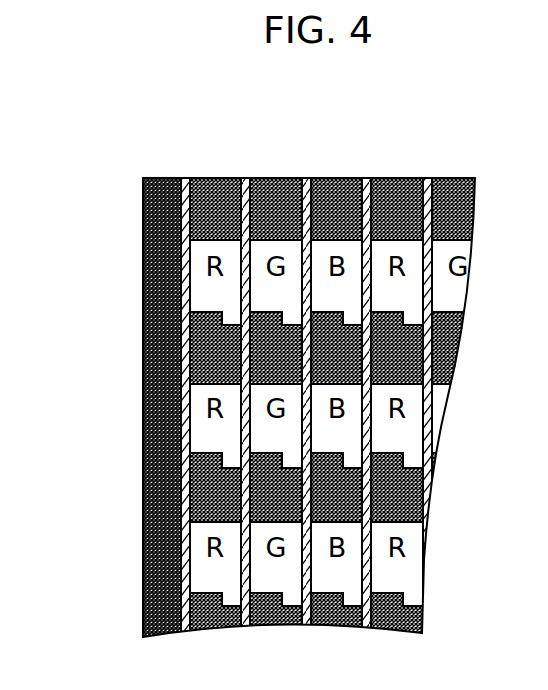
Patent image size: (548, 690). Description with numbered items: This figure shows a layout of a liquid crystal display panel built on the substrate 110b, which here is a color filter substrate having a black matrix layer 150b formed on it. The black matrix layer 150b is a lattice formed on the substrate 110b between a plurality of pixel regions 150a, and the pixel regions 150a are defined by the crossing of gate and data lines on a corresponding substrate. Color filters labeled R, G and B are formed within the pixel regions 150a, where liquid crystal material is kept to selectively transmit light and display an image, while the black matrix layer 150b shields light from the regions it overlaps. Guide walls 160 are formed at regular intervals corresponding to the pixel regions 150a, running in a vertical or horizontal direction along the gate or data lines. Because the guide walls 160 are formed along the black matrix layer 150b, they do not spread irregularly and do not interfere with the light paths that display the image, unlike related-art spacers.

The pixel regions 150a is at (217, 178).
The black matrix layer 150b is at (333, 178).
The guide walls 160 is at (144, 257).
The substrate 110b is at (144, 360).